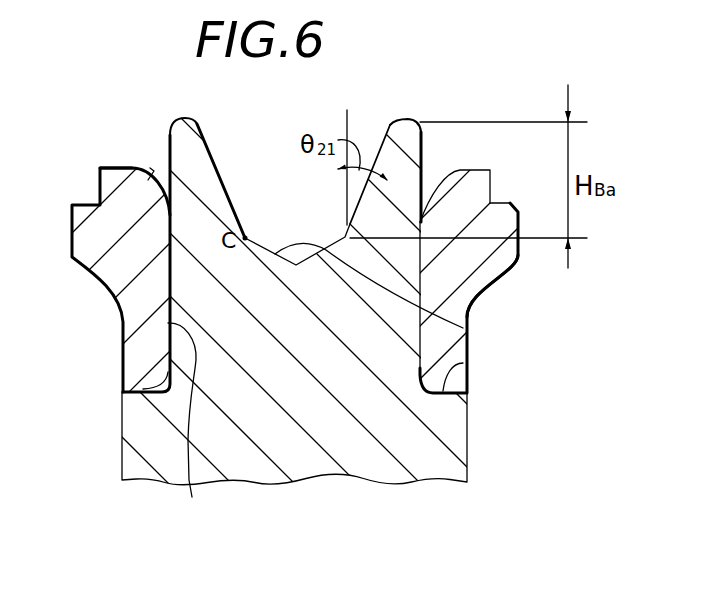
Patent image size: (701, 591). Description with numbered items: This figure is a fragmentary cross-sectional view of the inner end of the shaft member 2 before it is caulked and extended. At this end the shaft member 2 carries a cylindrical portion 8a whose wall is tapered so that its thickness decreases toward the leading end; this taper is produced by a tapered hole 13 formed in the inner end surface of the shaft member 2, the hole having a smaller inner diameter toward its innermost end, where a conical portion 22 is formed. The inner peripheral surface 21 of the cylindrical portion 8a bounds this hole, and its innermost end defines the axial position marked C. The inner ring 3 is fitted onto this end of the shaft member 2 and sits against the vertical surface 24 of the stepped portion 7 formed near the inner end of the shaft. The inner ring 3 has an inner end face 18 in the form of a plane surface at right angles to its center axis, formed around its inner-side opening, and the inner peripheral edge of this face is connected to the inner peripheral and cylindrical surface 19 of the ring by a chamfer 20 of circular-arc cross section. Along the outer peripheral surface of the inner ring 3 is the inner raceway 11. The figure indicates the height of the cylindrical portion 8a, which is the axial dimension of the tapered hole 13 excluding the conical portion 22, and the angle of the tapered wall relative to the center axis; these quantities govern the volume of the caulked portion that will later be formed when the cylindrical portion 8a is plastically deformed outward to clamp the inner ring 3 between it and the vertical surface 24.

The shaft member 2 is at (440, 468).
The inner ring 3 is at (475, 182).
The stepped portion 7 is at (122, 320).
The cylindrical portion 8a is at (396, 133).
The inner raceway 11 is at (495, 280).
The tapered hole 13 is at (220, 162).
The inner end face 18 is at (121, 168).
The inner peripheral and cylindrical surface 19 is at (188, 428).
The chamfer 20 is at (150, 168).
The inner peripheral surface 21 is at (237, 202).
The conical portion 22 is at (463, 328).
The vertical surface 24 is at (463, 363).